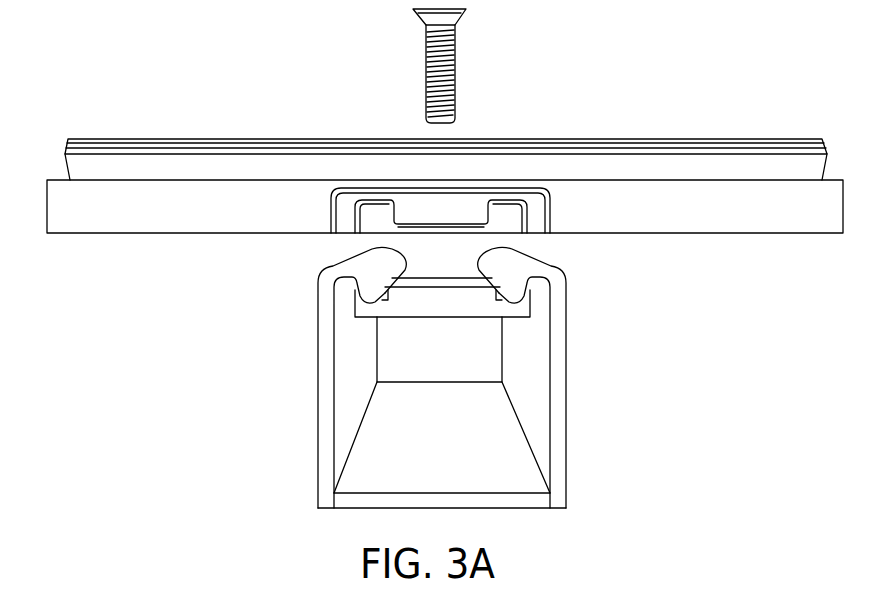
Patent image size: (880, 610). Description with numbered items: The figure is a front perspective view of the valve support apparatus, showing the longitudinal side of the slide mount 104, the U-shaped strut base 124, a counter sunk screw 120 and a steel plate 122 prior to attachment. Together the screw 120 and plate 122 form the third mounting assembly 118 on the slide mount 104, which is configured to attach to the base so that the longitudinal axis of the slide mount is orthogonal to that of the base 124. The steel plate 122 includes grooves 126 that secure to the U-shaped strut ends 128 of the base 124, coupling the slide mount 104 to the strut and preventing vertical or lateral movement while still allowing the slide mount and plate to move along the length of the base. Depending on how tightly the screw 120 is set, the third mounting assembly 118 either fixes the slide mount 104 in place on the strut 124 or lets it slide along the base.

The slide mount 104 is at (68, 178).
The third mounting assembly 118 is at (347, 209).
The counter sunk screw 120 is at (457, 69).
The steel plate 122 is at (442, 318).
The U-shaped strut base 124 is at (318, 399).
The grooves 126 is at (498, 297).
The U-shaped strut ends 128 is at (546, 281).